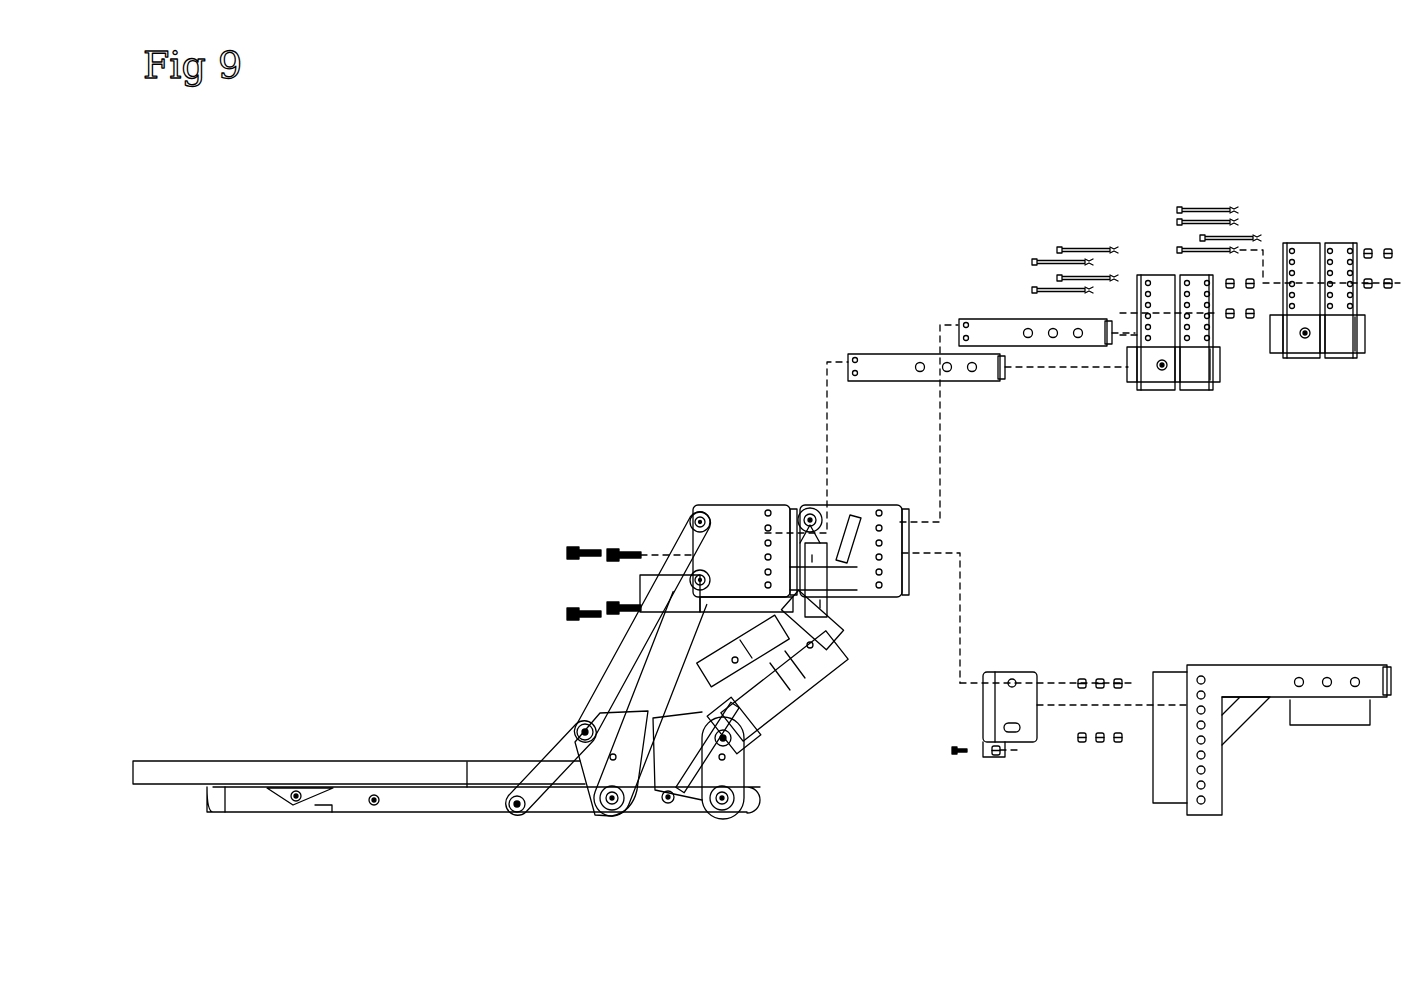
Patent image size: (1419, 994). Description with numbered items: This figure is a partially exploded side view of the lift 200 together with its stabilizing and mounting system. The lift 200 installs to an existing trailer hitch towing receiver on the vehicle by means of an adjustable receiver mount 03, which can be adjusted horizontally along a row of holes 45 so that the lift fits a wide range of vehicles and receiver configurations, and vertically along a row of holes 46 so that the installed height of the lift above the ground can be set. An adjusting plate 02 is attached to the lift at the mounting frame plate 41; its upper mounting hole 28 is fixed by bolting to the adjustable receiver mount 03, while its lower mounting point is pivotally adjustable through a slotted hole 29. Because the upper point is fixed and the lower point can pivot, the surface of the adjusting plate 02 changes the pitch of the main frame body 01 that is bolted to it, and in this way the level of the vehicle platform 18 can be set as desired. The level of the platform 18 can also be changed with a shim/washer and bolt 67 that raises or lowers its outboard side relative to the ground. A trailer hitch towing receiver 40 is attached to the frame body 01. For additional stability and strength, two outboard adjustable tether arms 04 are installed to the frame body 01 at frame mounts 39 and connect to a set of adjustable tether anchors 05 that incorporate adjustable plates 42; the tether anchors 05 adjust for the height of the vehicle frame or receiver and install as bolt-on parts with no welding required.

The lift 200 is at (593, 383).
The vehicle platform 18 is at (318, 760).
The main frame body 01 is at (716, 508).
The frame mounts 39 is at (765, 510).
The trailer hitch towing receiver 40 is at (655, 577).
The mounting frame plate 41 is at (821, 578).
The outboard adjustable tether arms 04 is at (892, 357).
The adjustable plates 42 is at (1161, 278).
The adjustable tether anchors 05 is at (1196, 368).
The adjusting plate 02 is at (1023, 705).
The upper mounting hole 28 is at (1012, 685).
The slotted hole 29 is at (1015, 736).
The shim/washer and bolt 67 is at (959, 757).
The adjustable receiver mount 03 is at (1257, 677).
The row of holes 46 is at (1152, 752).
The row of holes 45 is at (1334, 726).